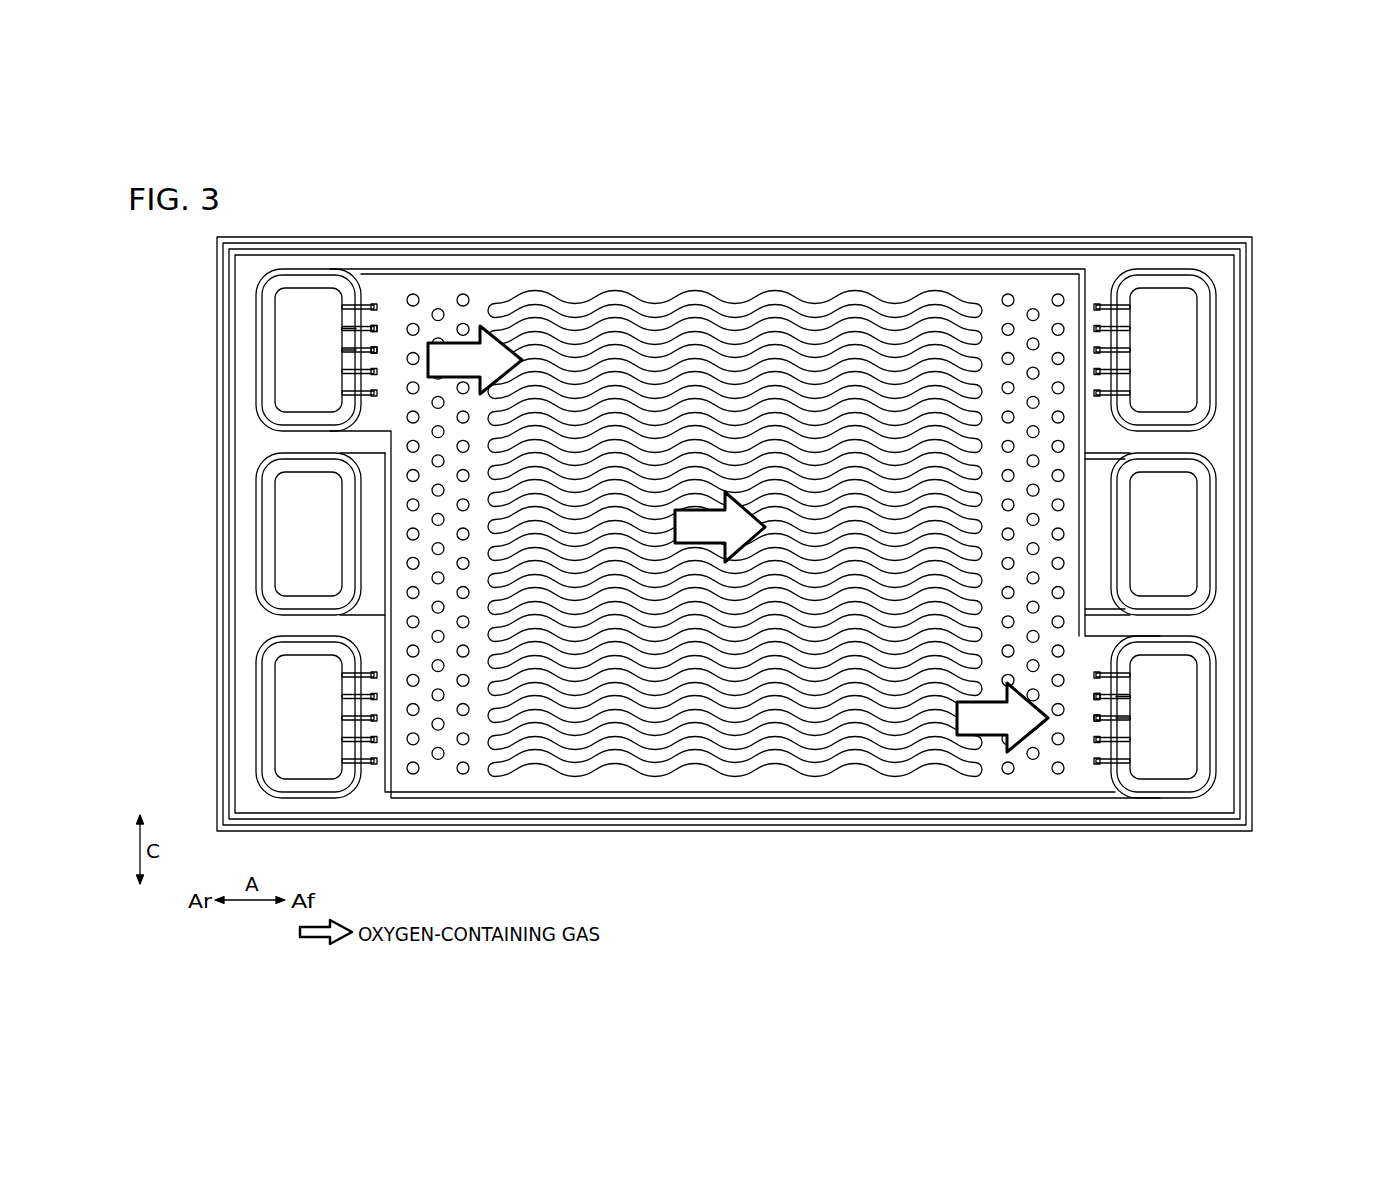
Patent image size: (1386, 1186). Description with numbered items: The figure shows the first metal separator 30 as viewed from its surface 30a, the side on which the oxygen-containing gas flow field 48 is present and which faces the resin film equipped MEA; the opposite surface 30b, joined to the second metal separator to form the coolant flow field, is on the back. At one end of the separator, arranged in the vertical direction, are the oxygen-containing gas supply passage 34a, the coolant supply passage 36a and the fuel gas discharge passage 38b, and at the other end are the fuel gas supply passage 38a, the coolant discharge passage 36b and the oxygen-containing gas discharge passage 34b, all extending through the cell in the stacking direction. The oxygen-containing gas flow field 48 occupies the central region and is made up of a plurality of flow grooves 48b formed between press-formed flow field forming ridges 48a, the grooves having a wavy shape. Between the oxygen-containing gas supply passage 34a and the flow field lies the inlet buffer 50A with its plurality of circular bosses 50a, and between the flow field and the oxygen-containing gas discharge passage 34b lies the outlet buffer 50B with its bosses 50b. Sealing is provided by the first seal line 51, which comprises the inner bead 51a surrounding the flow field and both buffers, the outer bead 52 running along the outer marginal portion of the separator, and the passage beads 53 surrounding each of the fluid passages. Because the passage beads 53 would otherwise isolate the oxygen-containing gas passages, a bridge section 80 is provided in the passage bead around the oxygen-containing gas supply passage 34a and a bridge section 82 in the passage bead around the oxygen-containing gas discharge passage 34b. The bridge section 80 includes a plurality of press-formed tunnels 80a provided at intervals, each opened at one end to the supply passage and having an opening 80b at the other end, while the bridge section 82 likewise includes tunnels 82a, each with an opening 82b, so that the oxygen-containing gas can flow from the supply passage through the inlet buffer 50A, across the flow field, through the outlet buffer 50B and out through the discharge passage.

The first metal separator 30 is at (1209, 208).
The surface 30a is at (518, 803).
The surface 30b is at (577, 803).
The oxygen-containing gas supply passage 34a is at (295, 323).
The oxygen-containing gas discharge passage 34b is at (1180, 745).
The coolant supply passage 36a is at (292, 536).
The coolant discharge passage 36b is at (1178, 512).
The fuel gas supply passage 38a is at (1178, 336).
The fuel gas discharge passage 38b is at (295, 733).
The oxygen-containing gas flow field 48 is at (735, 478).
The flow field forming ridges 48a is at (548, 325).
The flow grooves 48b is at (683, 313).
The inlet buffer 50A is at (438, 594).
The outlet buffer 50B is at (1049, 486).
The bosses 50a is at (413, 777).
The bosses 50b is at (1061, 295).
The first seal line 51 is at (757, 576).
The inner bead 51a is at (1098, 795).
The outer bead 52 is at (734, 560).
The passage beads 53 is at (1213, 300).
The bridge section 80 is at (368, 294).
The tunnels 80a is at (348, 340).
The opening 80b is at (378, 350).
The bridge section 82 is at (1091, 785).
The tunnels 82a is at (1125, 697).
The opening 82b is at (1095, 719).